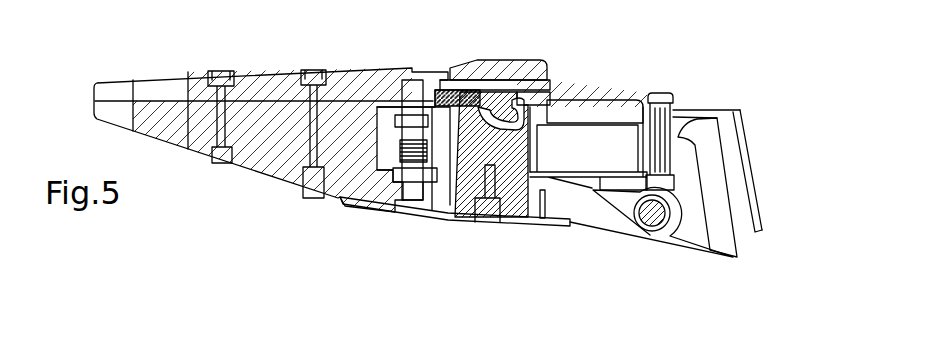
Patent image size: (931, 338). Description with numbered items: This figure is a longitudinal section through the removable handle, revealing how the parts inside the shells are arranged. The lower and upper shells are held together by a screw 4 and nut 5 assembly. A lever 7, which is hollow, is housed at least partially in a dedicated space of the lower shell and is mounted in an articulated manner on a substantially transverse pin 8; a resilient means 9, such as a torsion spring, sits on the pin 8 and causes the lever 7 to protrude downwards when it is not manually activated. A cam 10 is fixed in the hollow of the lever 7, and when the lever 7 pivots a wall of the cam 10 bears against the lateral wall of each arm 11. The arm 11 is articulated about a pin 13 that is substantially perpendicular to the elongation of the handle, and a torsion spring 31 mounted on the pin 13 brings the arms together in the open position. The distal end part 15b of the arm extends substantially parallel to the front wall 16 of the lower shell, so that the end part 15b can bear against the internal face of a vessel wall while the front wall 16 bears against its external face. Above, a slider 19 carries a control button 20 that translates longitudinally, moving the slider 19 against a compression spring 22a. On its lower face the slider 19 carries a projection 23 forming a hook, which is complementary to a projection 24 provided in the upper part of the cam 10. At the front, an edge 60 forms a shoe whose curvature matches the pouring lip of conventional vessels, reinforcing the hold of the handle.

The screw 4 is at (313, 172).
The nut 5 is at (316, 70).
The lever 7 is at (550, 225).
The pin 8 is at (660, 214).
The resilient means 9 is at (630, 190).
The cam 10 is at (463, 208).
The arm 11 is at (673, 110).
The pin 13 is at (418, 87).
The distal end part 15b is at (743, 162).
The front wall 16 is at (740, 227).
The slider 19 is at (490, 100).
The control button 20 is at (527, 67).
The compression spring 22a is at (453, 93).
The projection 23 is at (507, 100).
The projection 24 is at (543, 112).
The torsion spring 31 is at (400, 153).
The edge 60 is at (717, 127).